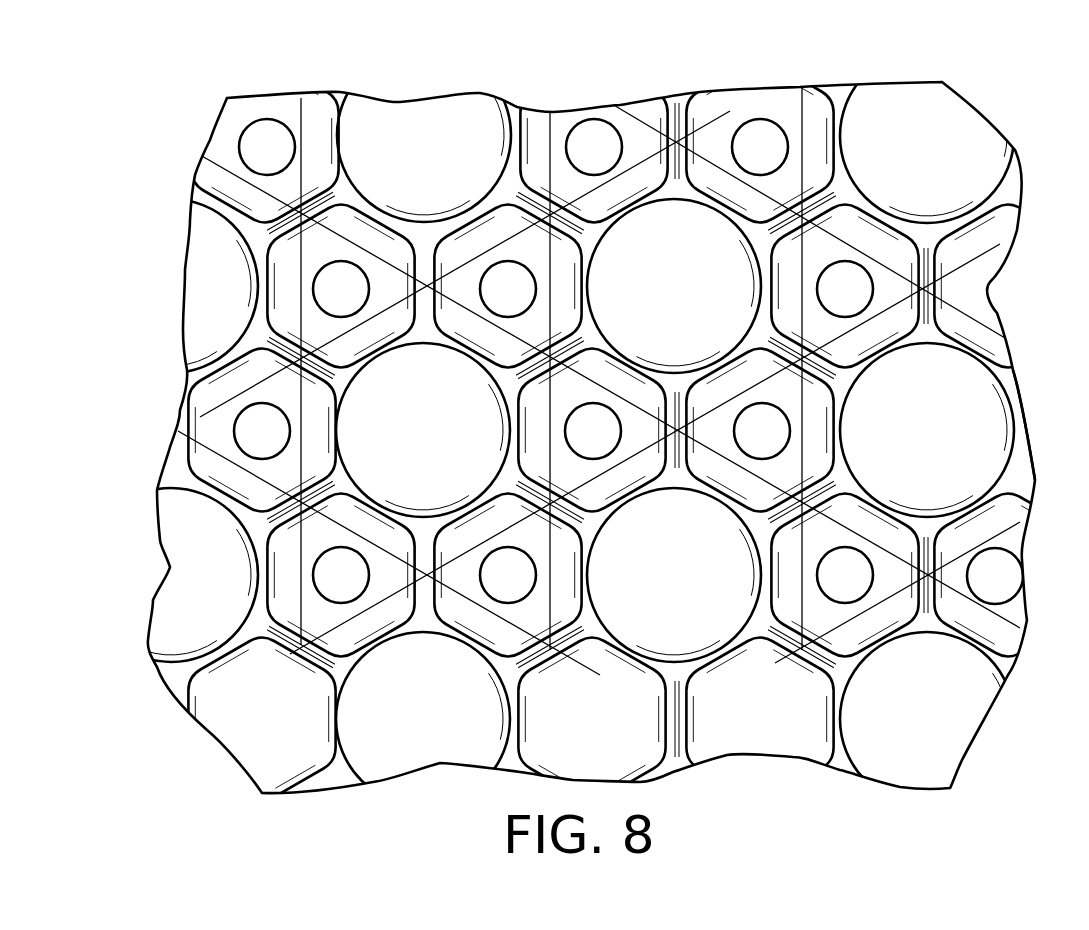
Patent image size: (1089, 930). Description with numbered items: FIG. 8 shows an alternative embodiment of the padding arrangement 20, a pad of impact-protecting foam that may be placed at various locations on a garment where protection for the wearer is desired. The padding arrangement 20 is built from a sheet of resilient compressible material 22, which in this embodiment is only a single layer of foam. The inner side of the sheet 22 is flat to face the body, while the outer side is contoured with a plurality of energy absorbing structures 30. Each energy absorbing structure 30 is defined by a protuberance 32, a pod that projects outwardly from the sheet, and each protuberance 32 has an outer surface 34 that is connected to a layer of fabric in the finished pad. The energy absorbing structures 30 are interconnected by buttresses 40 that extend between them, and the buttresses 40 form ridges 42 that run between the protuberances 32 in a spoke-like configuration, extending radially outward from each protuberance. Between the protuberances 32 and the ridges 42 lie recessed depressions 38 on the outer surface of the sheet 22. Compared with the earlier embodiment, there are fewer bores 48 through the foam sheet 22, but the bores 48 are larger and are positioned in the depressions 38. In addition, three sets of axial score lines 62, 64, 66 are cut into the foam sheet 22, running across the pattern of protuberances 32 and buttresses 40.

The padding arrangement 20 is at (176, 123).
The sheet of resilient compressible material 22 is at (985, 237).
The energy absorbing structures 30 is at (427, 430).
The protuberances 32 is at (977, 147).
The outer surface 34 is at (683, 230).
The depressions 38 is at (313, 330).
The buttresses 40 is at (457, 256).
The ridges 42 is at (421, 262).
The bores 48 is at (848, 298).
The axial score lines 62 is at (755, 349).
The axial score lines 64 is at (883, 548).
The axial score lines 66 is at (810, 448).